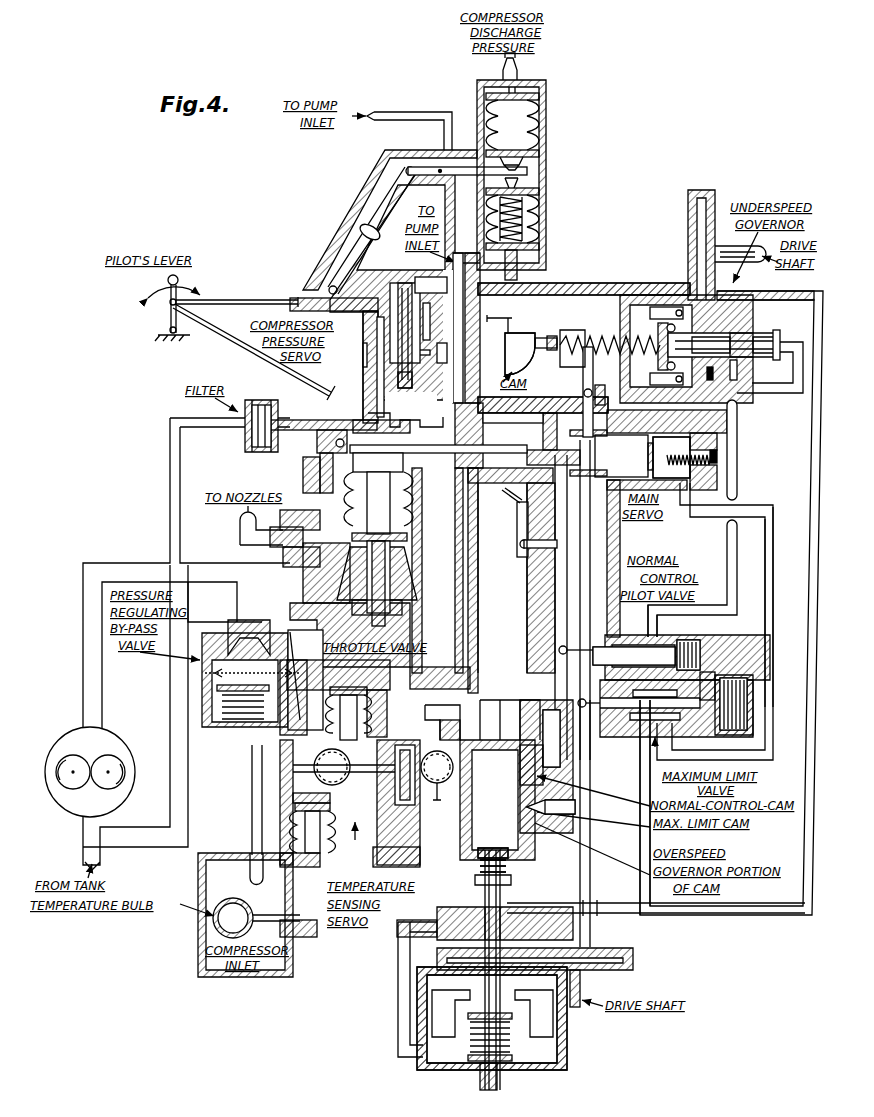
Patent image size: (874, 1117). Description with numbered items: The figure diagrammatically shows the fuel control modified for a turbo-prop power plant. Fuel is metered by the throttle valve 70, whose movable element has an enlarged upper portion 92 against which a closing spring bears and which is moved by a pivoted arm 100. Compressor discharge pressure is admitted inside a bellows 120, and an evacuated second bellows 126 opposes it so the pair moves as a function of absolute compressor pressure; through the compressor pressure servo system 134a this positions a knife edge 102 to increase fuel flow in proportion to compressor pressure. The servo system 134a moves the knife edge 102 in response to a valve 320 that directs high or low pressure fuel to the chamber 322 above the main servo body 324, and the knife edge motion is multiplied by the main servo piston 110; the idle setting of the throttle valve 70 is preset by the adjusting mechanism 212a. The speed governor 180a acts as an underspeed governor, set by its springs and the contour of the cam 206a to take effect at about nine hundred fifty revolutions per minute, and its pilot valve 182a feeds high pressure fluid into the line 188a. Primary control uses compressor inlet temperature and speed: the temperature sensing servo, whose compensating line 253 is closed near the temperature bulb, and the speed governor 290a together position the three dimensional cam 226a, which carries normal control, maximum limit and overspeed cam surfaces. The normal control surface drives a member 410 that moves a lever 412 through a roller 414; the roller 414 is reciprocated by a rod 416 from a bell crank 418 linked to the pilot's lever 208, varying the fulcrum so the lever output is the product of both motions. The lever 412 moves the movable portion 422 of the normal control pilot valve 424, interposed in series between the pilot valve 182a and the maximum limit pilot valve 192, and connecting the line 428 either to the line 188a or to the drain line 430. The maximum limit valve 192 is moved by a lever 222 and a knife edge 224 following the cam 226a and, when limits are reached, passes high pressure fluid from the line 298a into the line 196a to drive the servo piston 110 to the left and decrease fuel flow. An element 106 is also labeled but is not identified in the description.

The bellows 120 is at (536, 118).
The second bellows 126 is at (532, 214).
The pilot's lever 208 is at (165, 306).
The compressor pressure servo system 134a is at (361, 366).
The pivoted arm 100 is at (338, 392).
The valve 320 is at (395, 300).
The chamber 322 is at (431, 285).
The main servo body 324 is at (406, 391).
The cam 206a is at (520, 348).
The housing wall 106 is at (500, 413).
The speed governor 180a is at (658, 281).
The pilot valve 182a is at (782, 342).
The main servo piston 110 is at (625, 445).
The knife edge 102 is at (407, 437).
The enlarged upper portion 92 is at (378, 497).
The throttle valve 70 is at (417, 538).
The bell crank 418 is at (518, 520).
The rod 416 is at (557, 555).
The member 410 is at (545, 690).
The adjusting mechanism 212a is at (718, 456).
The line 188a is at (740, 472).
The line 196a is at (775, 545).
The line 430 is at (612, 650).
The movable portion 422 is at (702, 600).
The normal control pilot valve 424 is at (700, 648).
The line 428 is at (705, 675).
The maximum limit pilot valve 192 is at (715, 700).
The line 253 is at (258, 816).
The lever 412 is at (560, 723).
The lever 222 is at (583, 745).
The roller 414 is at (527, 760).
The knife edge 224 is at (563, 810).
The three dimensional cam 226a is at (510, 858).
The line 298a is at (643, 900).
The speed governor 290a is at (570, 1050).